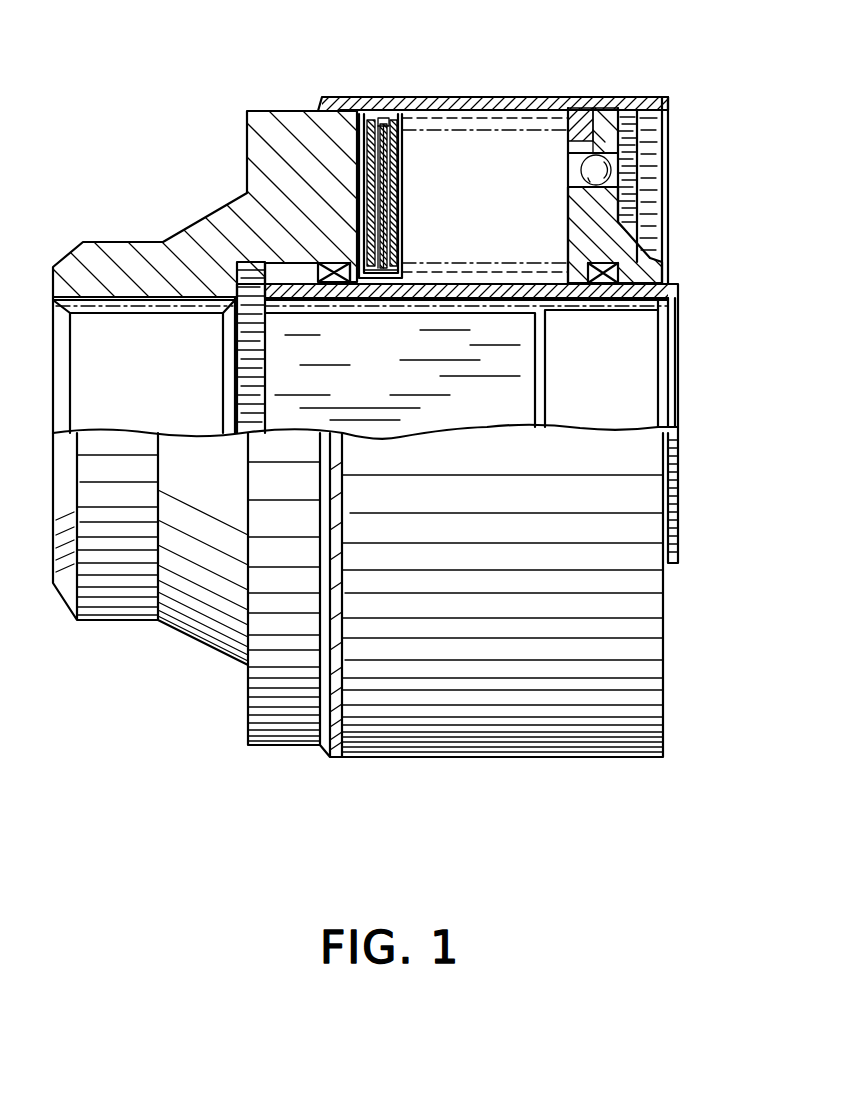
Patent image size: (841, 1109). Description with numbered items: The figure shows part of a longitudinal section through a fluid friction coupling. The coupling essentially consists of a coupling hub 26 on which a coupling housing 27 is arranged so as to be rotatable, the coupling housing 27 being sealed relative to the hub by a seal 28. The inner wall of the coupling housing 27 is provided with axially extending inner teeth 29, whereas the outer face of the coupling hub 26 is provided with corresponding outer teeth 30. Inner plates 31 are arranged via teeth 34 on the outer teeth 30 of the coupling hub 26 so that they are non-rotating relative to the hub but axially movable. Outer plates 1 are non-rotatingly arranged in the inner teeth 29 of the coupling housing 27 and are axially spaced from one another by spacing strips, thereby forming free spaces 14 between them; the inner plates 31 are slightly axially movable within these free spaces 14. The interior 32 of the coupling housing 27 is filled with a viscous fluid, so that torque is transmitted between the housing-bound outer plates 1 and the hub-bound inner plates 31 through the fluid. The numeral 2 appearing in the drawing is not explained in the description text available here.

The outer plates 1 is at (358, 114).
The second sealing ring 2 is at (392, 116).
The free spaces 14 is at (392, 262).
The coupling hub 26 is at (678, 285).
The coupling housing 27 is at (332, 128).
The seal 28 is at (293, 262).
The inner teeth 29 is at (500, 112).
The outer teeth 30 is at (437, 282).
The inner plates 31 is at (360, 287).
The interior 32 is at (513, 163).
The teeth 34 is at (395, 266).